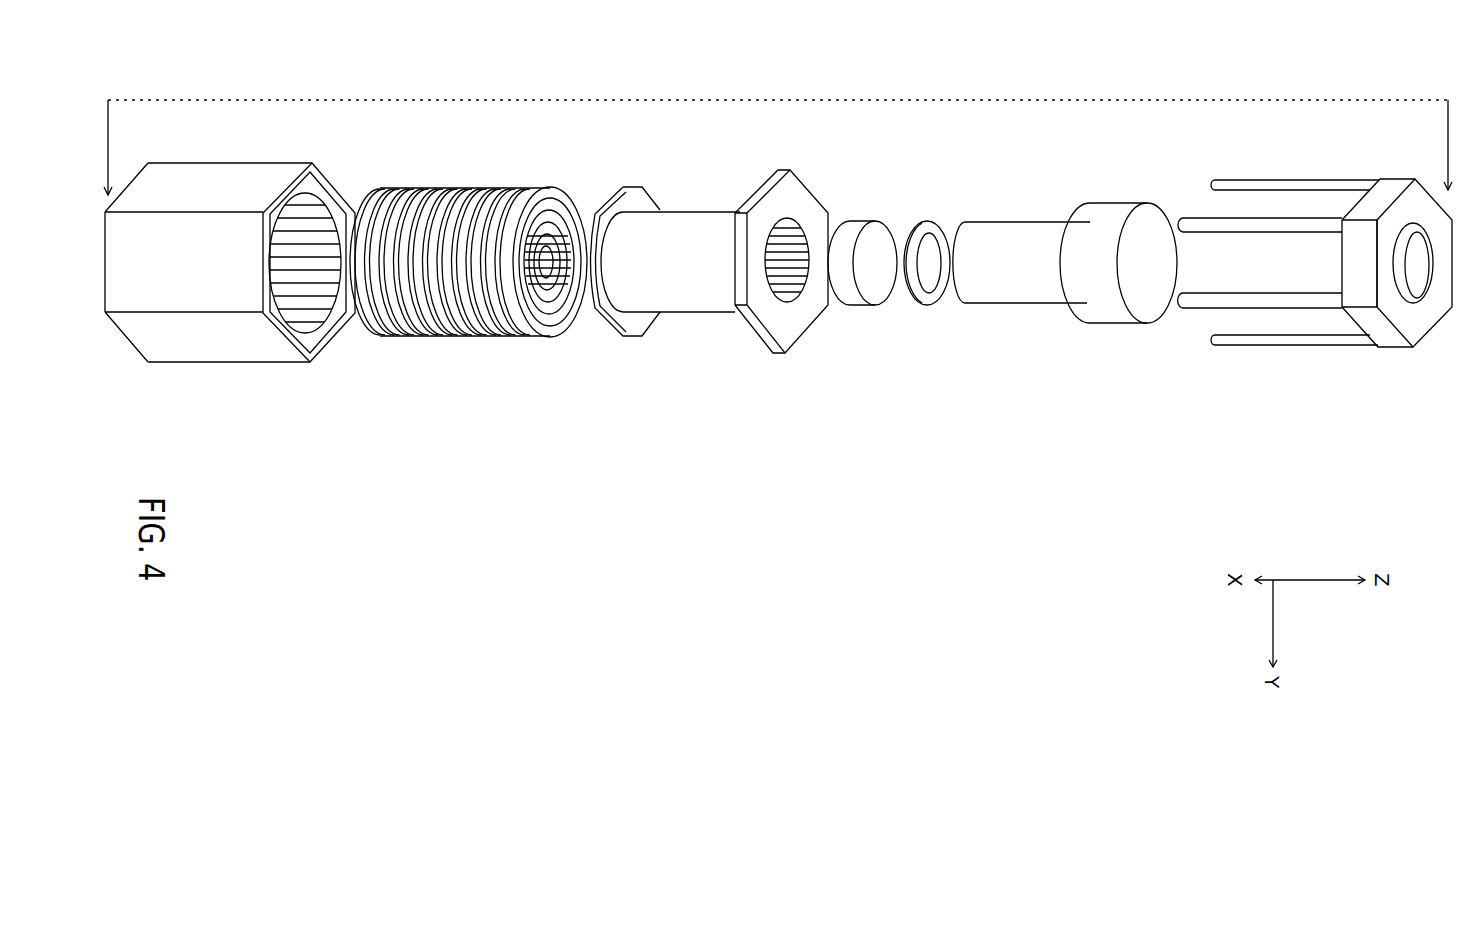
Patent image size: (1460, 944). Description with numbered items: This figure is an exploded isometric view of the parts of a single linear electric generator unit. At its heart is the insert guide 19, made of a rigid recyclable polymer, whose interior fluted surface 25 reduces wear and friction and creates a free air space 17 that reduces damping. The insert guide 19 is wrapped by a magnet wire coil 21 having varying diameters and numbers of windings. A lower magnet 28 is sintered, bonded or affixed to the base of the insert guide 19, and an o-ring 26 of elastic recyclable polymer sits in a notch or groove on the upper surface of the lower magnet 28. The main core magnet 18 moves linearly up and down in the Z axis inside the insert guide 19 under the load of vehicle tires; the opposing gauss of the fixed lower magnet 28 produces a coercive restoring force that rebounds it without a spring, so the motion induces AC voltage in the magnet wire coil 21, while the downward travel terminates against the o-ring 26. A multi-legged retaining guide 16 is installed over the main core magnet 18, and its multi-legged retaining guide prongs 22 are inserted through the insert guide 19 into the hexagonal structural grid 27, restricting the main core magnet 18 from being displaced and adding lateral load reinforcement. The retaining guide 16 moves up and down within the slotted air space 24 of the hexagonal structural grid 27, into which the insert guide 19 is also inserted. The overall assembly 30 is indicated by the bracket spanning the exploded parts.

The fitting assembly 30 is at (813, 99).
The hexagonal structural grid 27 is at (327, 350).
The slotted air space 24 is at (352, 315).
The magnet wire coil 21 is at (522, 333).
The insert guide 19 is at (687, 313).
The free air space 17 is at (803, 317).
The interior fluted surface 25 is at (848, 305).
The lower magnet 28 is at (883, 298).
The o-ring 26 is at (937, 297).
The main core magnet 18 is at (1060, 298).
The multi-legged retaining guide prongs 22 is at (1217, 345).
The multi-legged retaining guide 16 is at (1418, 342).